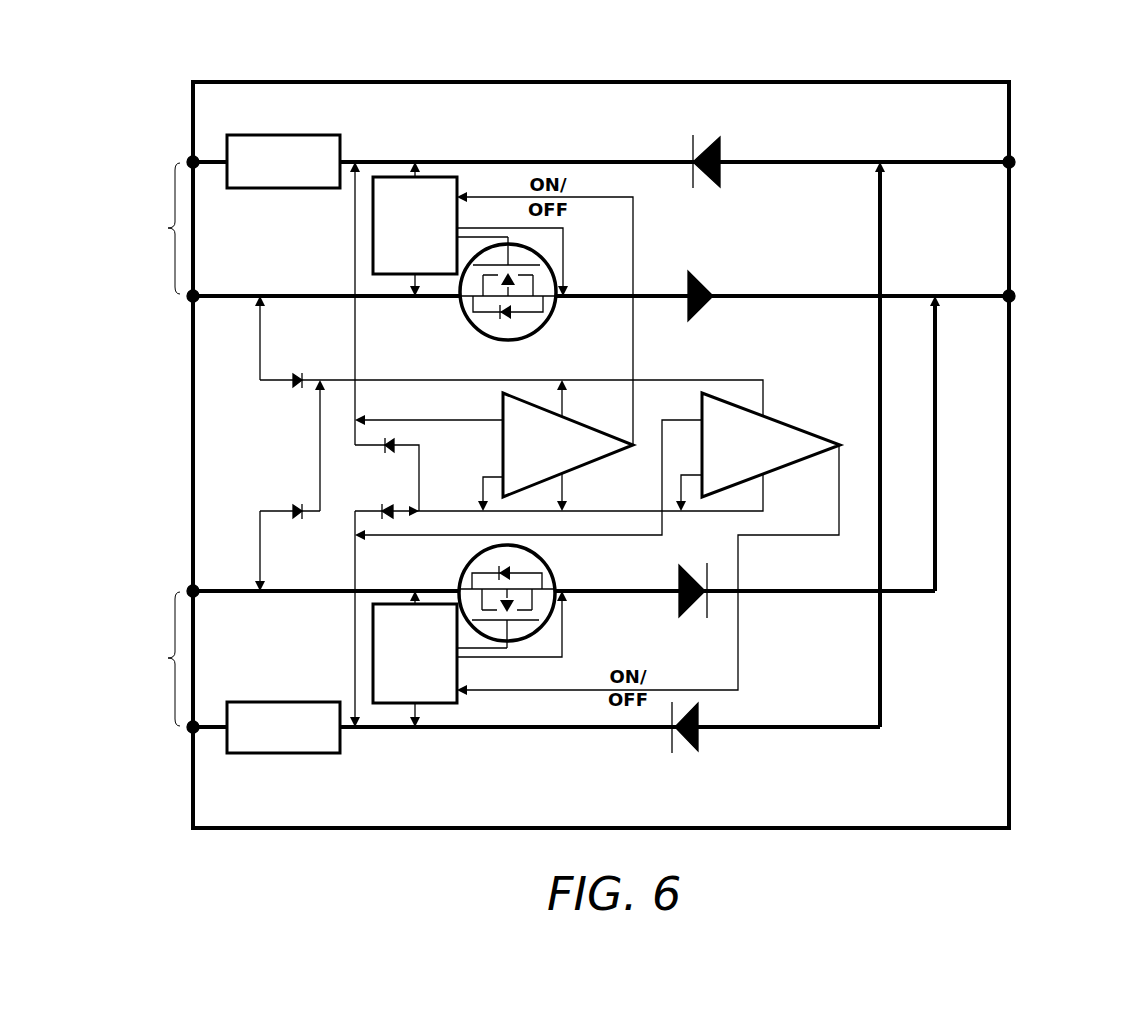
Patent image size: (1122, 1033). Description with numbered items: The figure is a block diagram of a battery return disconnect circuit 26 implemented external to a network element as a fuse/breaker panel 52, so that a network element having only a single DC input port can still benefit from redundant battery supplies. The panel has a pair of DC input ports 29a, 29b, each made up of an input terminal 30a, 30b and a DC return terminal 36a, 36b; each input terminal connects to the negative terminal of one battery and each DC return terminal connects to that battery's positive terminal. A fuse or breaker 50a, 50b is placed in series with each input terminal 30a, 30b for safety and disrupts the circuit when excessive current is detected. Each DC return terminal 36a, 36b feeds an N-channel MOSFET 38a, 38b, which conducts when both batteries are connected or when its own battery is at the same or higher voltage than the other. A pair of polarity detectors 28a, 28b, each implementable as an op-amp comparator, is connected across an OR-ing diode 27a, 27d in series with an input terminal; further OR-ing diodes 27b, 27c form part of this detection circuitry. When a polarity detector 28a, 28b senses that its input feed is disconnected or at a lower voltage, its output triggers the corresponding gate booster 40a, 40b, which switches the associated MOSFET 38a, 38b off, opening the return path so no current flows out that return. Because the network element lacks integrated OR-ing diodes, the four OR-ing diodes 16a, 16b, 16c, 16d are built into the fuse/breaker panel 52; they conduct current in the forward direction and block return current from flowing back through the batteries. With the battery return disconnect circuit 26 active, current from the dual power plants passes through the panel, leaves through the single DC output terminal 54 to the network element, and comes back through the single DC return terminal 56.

The battery return disconnect circuit 26 is at (638, 103).
The fuse/breaker panel 52 is at (966, 58).
The OR-ing diode 16a is at (723, 133).
The OR-ing diode 16b is at (693, 272).
The OR-ing diode 16c is at (678, 615).
The OR-ing diode 16d is at (693, 755).
The OR-ing diode 27a is at (390, 453).
The OR-ing diode 27b is at (296, 390).
The OR-ing diode 27c is at (296, 503).
The OR-ing diode 27d is at (395, 503).
The polarity detector 28a is at (780, 422).
The polarity detector 28b is at (587, 467).
The DC input port 29a is at (138, 659).
The DC input port 29b is at (138, 228).
The input terminal 30a is at (190, 729).
The input terminal 30b is at (190, 162).
The DC return terminal 36a is at (190, 590).
The DC return terminal 36b is at (190, 298).
The N-channel MOSFET 38a is at (553, 566).
The N-channel MOSFET 38b is at (548, 325).
The gate booster 40a is at (399, 631).
The gate booster 40b is at (399, 203).
The fuse or breaker 50a is at (342, 733).
The fuse or breaker 50b is at (342, 148).
The DC output terminal 54 is at (1013, 160).
The DC return terminal 56 is at (1013, 298).